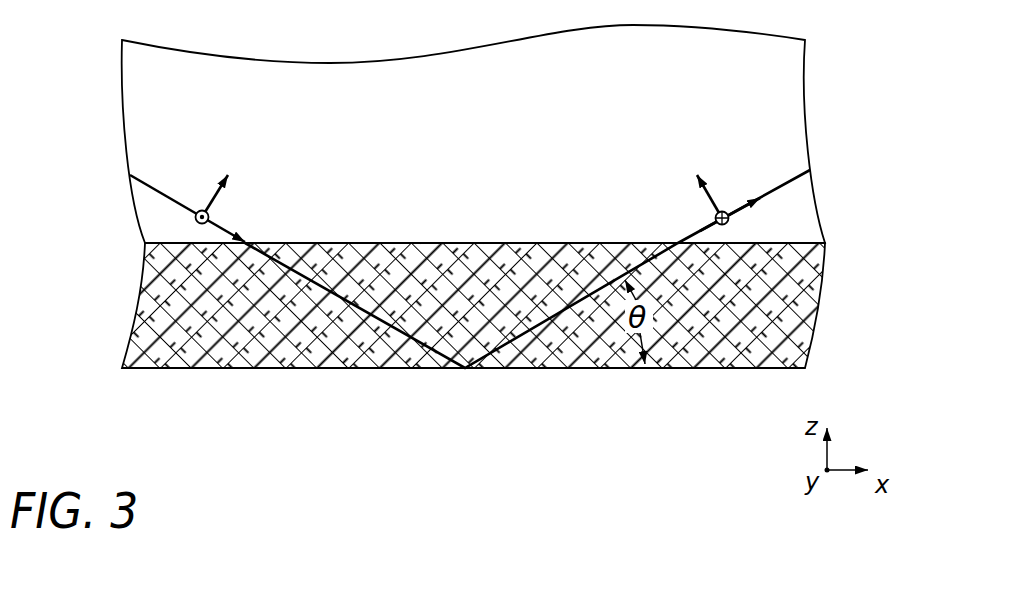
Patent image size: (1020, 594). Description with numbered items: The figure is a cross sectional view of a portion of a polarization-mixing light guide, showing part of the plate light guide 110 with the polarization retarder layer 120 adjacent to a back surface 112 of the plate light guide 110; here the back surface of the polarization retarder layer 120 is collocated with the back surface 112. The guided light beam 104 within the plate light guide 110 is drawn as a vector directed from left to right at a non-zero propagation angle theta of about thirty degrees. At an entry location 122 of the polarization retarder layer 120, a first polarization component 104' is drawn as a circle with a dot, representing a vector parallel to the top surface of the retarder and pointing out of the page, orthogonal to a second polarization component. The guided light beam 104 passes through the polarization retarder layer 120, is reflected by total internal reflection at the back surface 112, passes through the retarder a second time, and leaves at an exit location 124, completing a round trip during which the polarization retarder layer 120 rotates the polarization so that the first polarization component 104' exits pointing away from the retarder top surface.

The plate light guide 110 is at (488, 123).
The polarization retarder layer 120 is at (818, 298).
The back surface of the plate light guide 112 is at (530, 367).
The guided light beam 104 is at (470, 247).
The first polarization component 104' is at (398, 215).
The entry location 122 is at (250, 238).
The exit location 124 is at (673, 236).